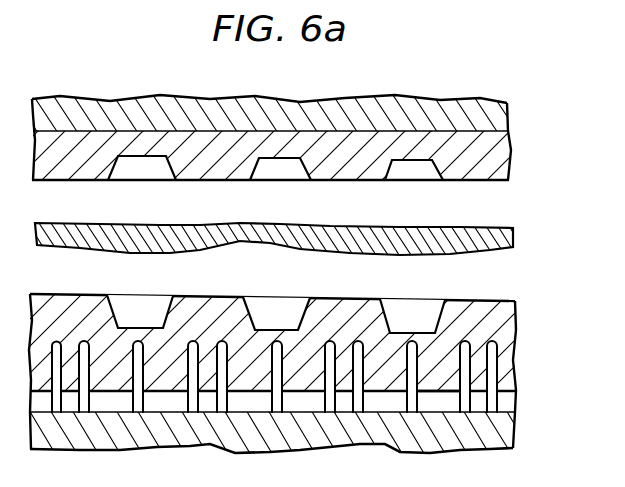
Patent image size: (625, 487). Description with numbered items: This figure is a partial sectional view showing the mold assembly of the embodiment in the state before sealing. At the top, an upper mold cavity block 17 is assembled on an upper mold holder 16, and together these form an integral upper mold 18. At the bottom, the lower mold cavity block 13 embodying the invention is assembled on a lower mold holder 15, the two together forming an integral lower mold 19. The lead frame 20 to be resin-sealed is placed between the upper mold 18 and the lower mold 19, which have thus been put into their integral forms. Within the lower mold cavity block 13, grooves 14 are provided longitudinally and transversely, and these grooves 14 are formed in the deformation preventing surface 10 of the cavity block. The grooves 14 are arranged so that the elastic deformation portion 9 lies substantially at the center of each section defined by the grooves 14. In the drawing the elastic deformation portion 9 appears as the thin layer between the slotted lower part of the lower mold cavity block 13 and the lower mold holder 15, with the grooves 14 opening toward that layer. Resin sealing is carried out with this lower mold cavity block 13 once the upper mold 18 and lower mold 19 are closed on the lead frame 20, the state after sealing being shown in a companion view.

The upper mold 18 is at (284, 127).
The upper mold holder 16 is at (506, 121).
The upper mold cavity block 17 is at (500, 168).
The lead frame 20 is at (514, 235).
The lower mold 19 is at (309, 383).
The lower mold cavity block 13 is at (516, 332).
The grooves 14 is at (277, 386).
The deformation preventing surface 10 is at (435, 395).
The elastic deformation portion 9 is at (480, 406).
The lower mold holder 15 is at (507, 435).